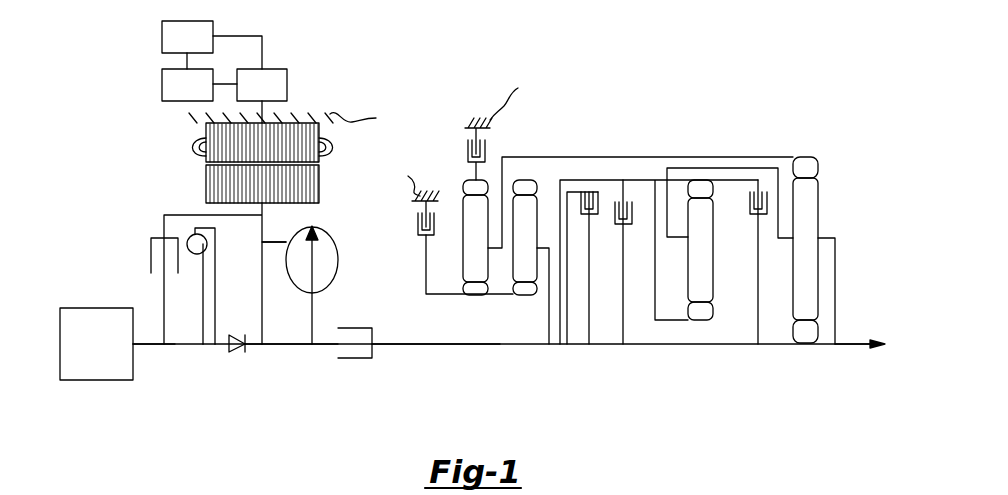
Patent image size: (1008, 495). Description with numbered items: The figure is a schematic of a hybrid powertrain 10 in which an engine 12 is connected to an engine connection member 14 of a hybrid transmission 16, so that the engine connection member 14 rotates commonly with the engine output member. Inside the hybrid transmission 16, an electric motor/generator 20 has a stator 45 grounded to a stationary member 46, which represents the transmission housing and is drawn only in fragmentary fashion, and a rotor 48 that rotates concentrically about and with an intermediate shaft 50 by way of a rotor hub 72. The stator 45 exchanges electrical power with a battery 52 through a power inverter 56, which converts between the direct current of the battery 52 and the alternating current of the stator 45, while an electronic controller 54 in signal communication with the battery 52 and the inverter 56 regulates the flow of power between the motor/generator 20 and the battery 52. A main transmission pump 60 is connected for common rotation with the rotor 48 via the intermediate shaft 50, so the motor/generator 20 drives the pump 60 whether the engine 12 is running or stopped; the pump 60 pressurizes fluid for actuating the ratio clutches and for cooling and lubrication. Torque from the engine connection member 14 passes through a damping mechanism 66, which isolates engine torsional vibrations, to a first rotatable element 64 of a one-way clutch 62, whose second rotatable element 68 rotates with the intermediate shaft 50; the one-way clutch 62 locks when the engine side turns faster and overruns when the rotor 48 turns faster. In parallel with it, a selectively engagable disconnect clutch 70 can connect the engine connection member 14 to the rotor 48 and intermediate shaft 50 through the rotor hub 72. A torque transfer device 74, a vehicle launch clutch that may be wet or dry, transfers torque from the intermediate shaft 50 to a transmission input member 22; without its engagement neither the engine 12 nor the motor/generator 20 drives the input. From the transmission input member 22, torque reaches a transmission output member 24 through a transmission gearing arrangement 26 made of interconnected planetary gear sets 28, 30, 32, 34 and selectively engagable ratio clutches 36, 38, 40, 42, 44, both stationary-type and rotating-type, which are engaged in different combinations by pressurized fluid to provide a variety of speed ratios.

The hybrid powertrain 10 is at (423, 75).
The engine 12 is at (111, 357).
The engine connection member 14 is at (150, 345).
The hybrid transmission 16 is at (538, 141).
The electric motor/generator 20 is at (311, 95).
The transmission input member 22 is at (440, 345).
The transmission output member 24 is at (857, 345).
The transmission gearing arrangement 26 is at (666, 126).
The planetary gear set 28 is at (478, 304).
The planetary gear set 30 is at (527, 304).
The planetary gear set 32 is at (697, 325).
The planetary gear set 34 is at (786, 324).
The ratio clutch 36 is at (408, 214).
The ratio clutch 38 is at (458, 152).
The ratio clutch 40 is at (601, 198).
The ratio clutch 42 is at (634, 206).
The ratio clutch 44 is at (739, 193).
The stator 45 is at (205, 141).
The stationary member 46 is at (365, 119).
The rotor 48 is at (206, 180).
The intermediate shaft 50 is at (292, 345).
The battery 52 is at (201, 97).
The electronic controller 54 is at (201, 49).
The power inverter 56 is at (276, 97).
The main transmission pump 60 is at (338, 250).
The one-way clutch 62 is at (237, 357).
The first rotatable element 64 is at (218, 345).
The damping mechanism 66 is at (229, 247).
The second rotatable element 68 is at (255, 345).
The disconnect clutch 70 is at (143, 265).
The rotor hub 72 is at (270, 242).
The torque transfer device 74 is at (360, 366).